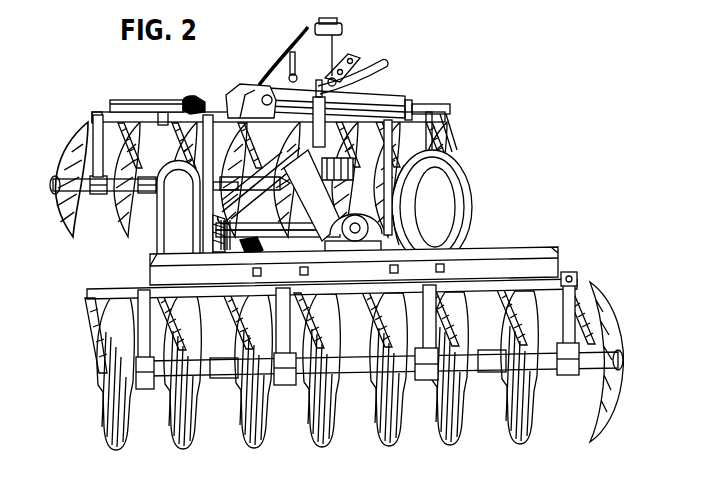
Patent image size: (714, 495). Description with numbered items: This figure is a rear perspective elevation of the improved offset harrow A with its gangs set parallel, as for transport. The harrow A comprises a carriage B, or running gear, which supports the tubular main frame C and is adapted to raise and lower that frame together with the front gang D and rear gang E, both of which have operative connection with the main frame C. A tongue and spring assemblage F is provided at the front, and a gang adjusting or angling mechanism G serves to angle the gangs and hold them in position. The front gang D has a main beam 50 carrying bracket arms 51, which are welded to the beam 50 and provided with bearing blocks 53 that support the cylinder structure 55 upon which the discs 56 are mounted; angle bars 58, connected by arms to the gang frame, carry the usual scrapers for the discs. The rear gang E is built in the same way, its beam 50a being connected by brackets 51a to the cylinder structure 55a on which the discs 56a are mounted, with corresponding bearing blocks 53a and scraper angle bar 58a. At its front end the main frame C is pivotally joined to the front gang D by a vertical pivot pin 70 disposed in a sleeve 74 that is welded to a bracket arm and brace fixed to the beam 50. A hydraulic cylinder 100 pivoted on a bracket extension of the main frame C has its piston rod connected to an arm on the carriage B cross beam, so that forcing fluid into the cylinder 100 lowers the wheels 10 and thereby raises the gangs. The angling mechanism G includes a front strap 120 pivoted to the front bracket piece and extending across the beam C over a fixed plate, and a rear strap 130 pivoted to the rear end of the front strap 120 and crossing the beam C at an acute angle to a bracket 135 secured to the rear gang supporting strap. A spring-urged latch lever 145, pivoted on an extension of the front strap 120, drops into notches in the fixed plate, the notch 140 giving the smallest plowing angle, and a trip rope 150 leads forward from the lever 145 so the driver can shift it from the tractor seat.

The wheel tire 10 is at (380, 233).
The sleeve 74 is at (389, 235).
The main beam 50 is at (191, 101).
The beam of rear gang 50a is at (152, 270).
The bracket arms 51 is at (112, 134).
The brackets 51a is at (100, 331).
The bearing blocks 53 is at (97, 192).
The front gang bearing 53a is at (143, 389).
The cylinder structure 55 is at (150, 190).
The cylinder structure 55a is at (230, 379).
The discs 56 is at (78, 216).
The discs 56a is at (193, 433).
The angle bars 58 is at (163, 121).
The front gang end bracket 58a is at (560, 276).
The vertical pivot pin 70 is at (237, 96).
The hydraulic cylinder 100 is at (357, 98).
The front strap 120 is at (207, 100).
The rear strap 130 is at (313, 195).
The bracket 135 is at (220, 237).
The notch 140 is at (346, 166).
The latch lever 145 is at (265, 75).
The trip rope 150 is at (260, 240).
The offset harrow A is at (463, 118).
The carriage B is at (168, 223).
The main frame C is at (294, 203).
The front gang D is at (139, 101).
The rear gang E is at (110, 403).
The tongue and spring assemblage F is at (347, 65).
The gang adjusting or angling mechanism G is at (203, 188).